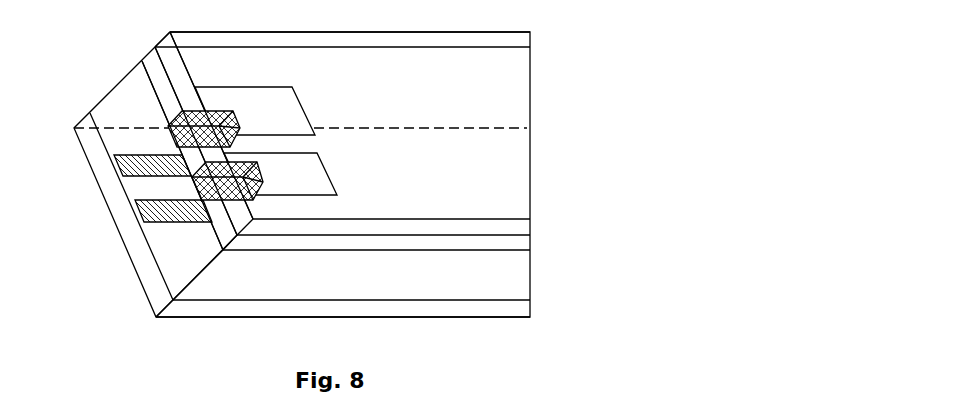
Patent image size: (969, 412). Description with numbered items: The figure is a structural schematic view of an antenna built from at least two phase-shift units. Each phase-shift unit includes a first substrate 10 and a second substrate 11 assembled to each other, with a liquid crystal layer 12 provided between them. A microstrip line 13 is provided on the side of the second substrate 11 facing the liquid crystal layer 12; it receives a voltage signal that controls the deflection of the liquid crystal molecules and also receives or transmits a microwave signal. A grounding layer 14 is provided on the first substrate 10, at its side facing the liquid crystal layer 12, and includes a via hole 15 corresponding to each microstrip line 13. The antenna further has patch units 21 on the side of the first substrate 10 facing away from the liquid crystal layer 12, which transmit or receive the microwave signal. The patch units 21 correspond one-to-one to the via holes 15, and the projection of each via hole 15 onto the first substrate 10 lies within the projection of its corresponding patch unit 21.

The first substrate 10 is at (517, 41).
The second substrate 11 is at (510, 309).
The liquid crystal layer 12 is at (510, 281).
The microstrip line 13 is at (125, 164).
The grounding layer 14 is at (512, 245).
The via hole 15 is at (203, 187).
The patch unit 21 is at (315, 175).